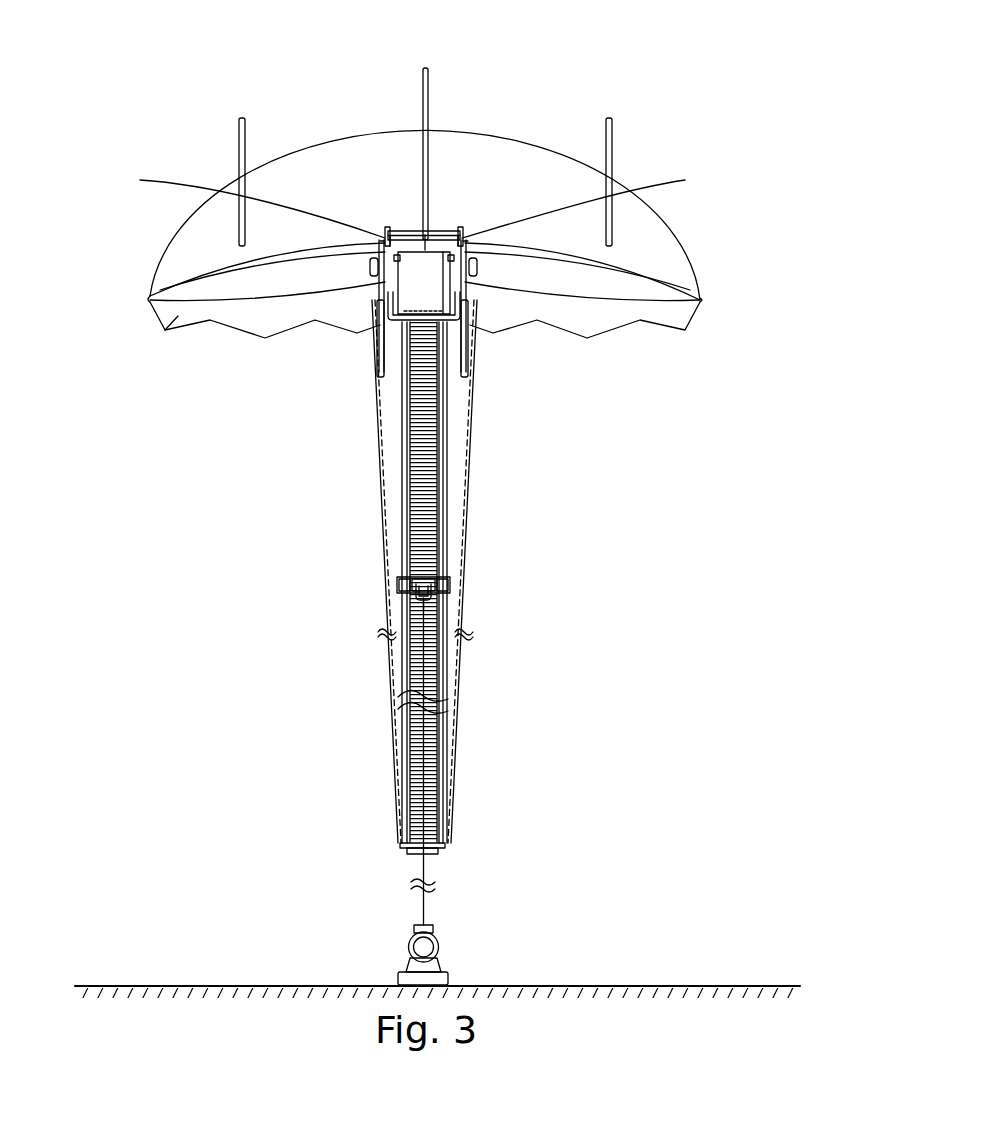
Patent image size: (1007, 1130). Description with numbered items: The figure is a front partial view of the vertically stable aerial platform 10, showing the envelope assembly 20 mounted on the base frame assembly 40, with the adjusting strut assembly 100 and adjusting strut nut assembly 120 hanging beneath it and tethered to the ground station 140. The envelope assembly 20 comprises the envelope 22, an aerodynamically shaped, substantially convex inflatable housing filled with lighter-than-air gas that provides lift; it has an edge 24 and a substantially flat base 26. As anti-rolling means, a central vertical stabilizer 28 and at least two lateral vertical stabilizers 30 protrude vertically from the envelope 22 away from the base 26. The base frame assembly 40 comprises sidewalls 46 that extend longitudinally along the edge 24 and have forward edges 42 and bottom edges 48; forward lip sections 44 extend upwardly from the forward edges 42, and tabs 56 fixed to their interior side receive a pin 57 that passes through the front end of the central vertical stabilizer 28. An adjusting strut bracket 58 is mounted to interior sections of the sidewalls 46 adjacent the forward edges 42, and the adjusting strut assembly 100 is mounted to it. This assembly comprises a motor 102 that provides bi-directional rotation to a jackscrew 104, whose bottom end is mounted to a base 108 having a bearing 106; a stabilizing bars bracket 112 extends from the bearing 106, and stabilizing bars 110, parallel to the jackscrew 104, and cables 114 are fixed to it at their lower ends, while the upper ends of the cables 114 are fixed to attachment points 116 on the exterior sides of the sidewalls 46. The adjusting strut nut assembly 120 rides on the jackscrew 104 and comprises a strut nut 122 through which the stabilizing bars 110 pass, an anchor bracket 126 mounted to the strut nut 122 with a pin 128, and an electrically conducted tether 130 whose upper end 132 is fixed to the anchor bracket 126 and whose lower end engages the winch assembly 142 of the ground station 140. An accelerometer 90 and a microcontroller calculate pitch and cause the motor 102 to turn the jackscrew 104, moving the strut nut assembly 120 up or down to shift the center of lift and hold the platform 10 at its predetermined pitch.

The vertically stable aerial platform 10 is at (654, 74).
The envelope assembly 20 is at (220, 94).
The envelope 22 is at (322, 162).
The edge 24 is at (148, 296).
The base 26 is at (180, 316).
The central vertical stabilizer 28 is at (430, 88).
The lateral vertical stabilizers 30 is at (240, 135).
The base frame assembly 40 is at (368, 354).
The forward edges 42 is at (374, 298).
The forward lip sections 44 is at (409, 201).
The sidewalls 46 is at (380, 364).
The bottom edges 48 is at (378, 378).
The tabs 56 is at (392, 232).
The pin 57 is at (437, 232).
The adjusting strut bracket 58 is at (470, 284).
The accelerometer 90 is at (180, 318).
The adjusting strut assembly 100 is at (384, 473).
The motor 102 is at (455, 250).
The jackscrew 104 is at (434, 470).
The bearing 106 is at (404, 840).
The base 108 is at (430, 852).
The stabilizing bars 110 is at (400, 504).
The stabilizing bars bracket 112 is at (446, 840).
The cables 114 is at (396, 450).
The attachment points 116 is at (148, 300).
The adjusting strut nut assembly 120 is at (384, 565).
The strut nut 122 is at (400, 582).
The anchor bracket 126 is at (405, 590).
The pin 128 is at (432, 578).
The electrically conducted tether 130 is at (420, 660).
The end 132 is at (430, 598).
The ground station 140 is at (398, 938).
The winch assembly 142 is at (444, 940).